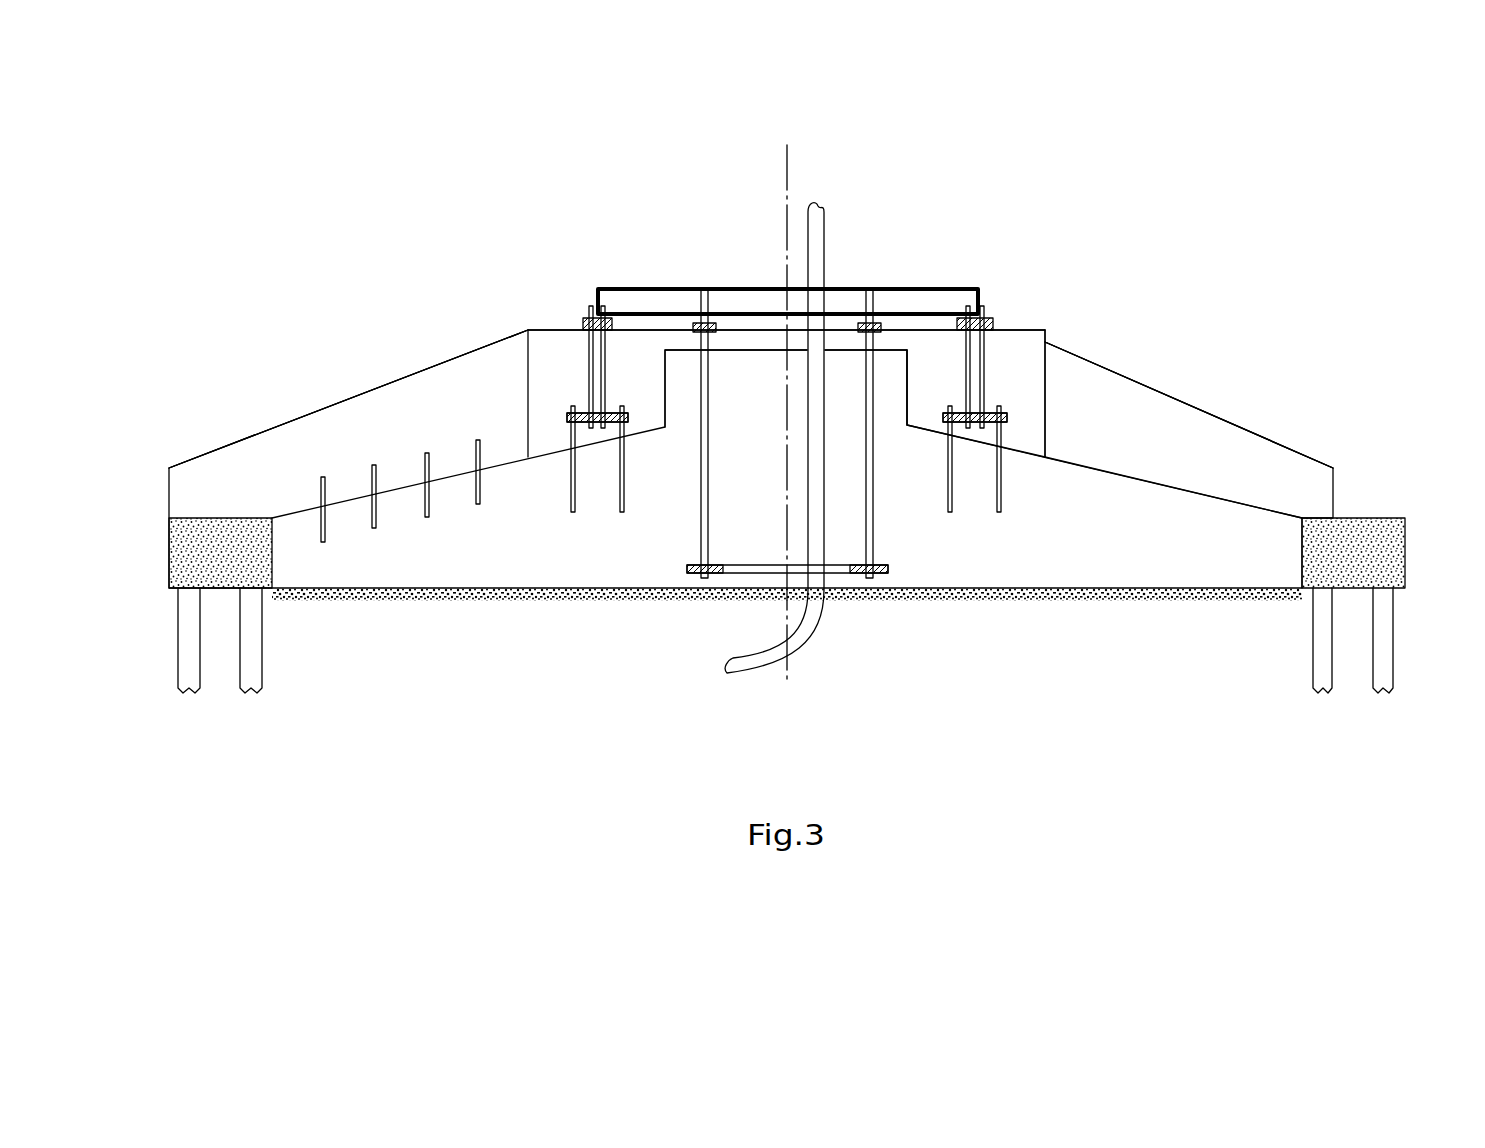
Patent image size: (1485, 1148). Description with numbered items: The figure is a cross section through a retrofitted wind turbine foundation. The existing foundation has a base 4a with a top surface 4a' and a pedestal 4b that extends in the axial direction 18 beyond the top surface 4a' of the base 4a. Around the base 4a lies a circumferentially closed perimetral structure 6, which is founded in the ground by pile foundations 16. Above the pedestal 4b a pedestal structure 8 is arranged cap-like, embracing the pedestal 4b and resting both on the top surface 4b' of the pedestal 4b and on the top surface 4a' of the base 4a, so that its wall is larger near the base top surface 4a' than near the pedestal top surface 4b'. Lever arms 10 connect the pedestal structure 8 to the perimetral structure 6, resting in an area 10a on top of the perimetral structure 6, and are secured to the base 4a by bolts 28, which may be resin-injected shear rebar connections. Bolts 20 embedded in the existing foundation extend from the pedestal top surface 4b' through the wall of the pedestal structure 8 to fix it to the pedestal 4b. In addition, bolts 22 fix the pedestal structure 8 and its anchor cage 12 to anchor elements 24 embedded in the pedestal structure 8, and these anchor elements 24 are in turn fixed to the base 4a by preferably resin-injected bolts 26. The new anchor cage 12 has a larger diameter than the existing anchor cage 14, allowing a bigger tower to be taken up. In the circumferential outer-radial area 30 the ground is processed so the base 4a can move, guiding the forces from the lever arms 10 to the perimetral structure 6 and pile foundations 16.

The base 4a is at (751, 507).
The top surface of base 4a' is at (1173, 458).
The pedestal 4b is at (786, 443).
The top surface of pedestal 4b' is at (943, 329).
The perimetral structure 6 is at (188, 555).
The pedestal structure 8 is at (1024, 347).
The lever arms 10 is at (308, 440).
The area 10a is at (432, 355).
The anchor cage 12 is at (620, 300).
The existing anchor cage 14 is at (703, 300).
The pile foundations 16 is at (190, 647).
The axial direction 18 is at (787, 163).
The bolts 20 is at (693, 516).
The bolts 22 is at (588, 365).
The anchor elements 24 is at (602, 473).
The bolts 26 is at (566, 497).
The bolts 28 is at (372, 516).
The outer-radial area 30 is at (410, 592).